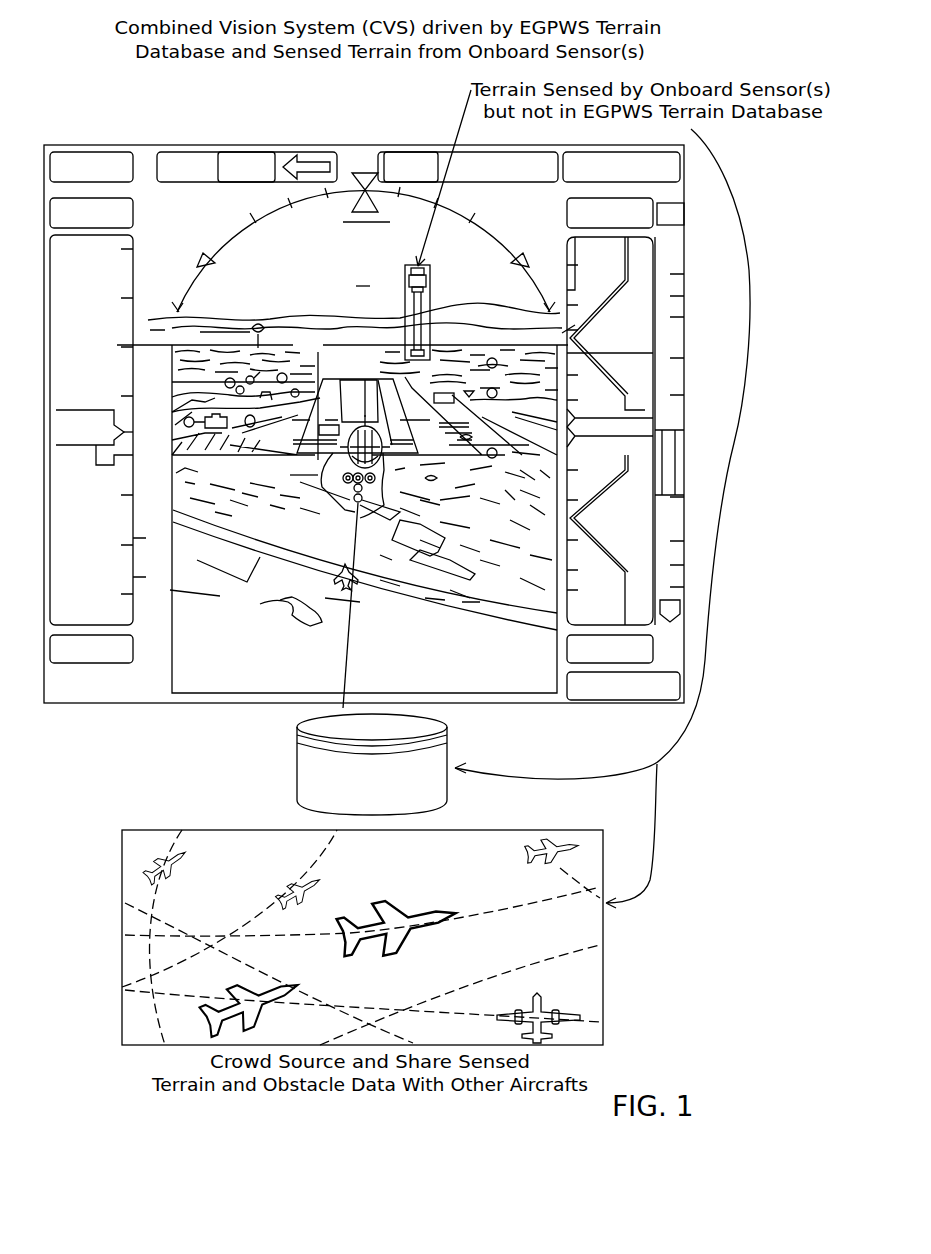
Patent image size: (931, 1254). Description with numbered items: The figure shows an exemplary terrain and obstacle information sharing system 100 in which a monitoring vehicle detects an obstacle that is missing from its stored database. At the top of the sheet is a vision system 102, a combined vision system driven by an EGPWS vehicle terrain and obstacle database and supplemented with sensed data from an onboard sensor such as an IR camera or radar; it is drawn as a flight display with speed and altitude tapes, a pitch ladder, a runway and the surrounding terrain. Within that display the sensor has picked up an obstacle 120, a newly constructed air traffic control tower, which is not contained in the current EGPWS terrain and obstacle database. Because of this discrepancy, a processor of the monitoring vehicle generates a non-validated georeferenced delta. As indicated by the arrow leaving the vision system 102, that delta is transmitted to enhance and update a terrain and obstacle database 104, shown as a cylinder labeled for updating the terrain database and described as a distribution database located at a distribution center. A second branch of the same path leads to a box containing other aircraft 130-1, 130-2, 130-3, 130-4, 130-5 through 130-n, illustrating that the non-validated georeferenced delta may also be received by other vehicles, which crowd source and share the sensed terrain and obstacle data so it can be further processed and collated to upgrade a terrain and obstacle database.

The terrain and obstacle information sharing system 100 is at (734, 33).
The vision system 102 is at (680, 370).
The terrain and obstacle database 104 is at (442, 756).
The obstacle 120 is at (409, 265).
The other aircraft 130-1 is at (558, 1010).
The other aircraft 130-2 is at (538, 849).
The other aircraft 130-3 is at (423, 918).
The other aircraft 130-4 is at (282, 890).
The other aircraft 130-5 is at (282, 988).
The other aircraft 130-n is at (182, 857).